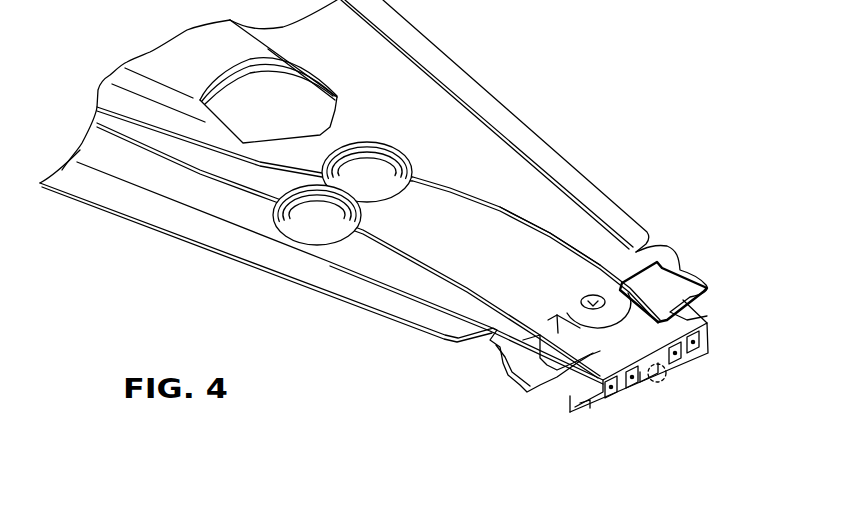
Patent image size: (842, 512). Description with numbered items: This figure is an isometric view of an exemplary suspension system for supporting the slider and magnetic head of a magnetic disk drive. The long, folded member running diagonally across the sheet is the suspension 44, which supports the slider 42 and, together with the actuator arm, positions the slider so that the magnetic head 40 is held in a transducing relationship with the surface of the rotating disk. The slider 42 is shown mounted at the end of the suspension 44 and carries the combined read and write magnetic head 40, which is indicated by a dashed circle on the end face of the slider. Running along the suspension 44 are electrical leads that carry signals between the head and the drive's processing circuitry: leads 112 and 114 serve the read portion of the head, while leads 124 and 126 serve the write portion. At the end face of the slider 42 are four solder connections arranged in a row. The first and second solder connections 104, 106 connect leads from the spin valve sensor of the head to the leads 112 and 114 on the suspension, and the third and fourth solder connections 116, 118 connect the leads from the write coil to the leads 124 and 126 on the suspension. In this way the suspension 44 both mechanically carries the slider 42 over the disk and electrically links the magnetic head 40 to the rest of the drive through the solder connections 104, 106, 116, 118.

The suspension 44 is at (511, 108).
The lead 114 is at (566, 238).
The lead 124 is at (433, 267).
The lead 126 is at (488, 205).
The lead 112 is at (386, 257).
The slider 42 is at (555, 394).
The magnetic head 40 is at (668, 385).
The first solder connection 104 is at (603, 393).
The third solder connection 116 is at (627, 388).
The fourth solder connection 118 is at (681, 358).
The second solder connection 106 is at (700, 340).